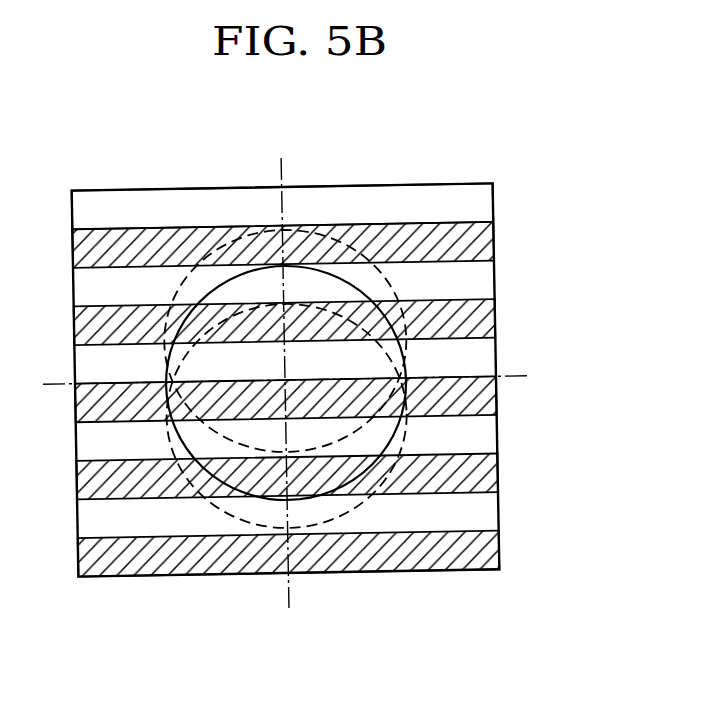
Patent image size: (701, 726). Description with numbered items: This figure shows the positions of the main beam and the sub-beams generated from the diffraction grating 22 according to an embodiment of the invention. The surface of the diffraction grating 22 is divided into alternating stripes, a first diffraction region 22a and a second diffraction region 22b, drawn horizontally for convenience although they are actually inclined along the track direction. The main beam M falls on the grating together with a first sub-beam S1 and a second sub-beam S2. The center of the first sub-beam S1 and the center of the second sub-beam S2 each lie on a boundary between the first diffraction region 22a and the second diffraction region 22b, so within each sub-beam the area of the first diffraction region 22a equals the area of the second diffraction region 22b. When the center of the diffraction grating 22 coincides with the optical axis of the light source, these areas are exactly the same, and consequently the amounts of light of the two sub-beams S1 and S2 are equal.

The diffraction grating 22 is at (462, 571).
The first diffraction region 22a is at (481, 212).
The second diffraction region 22b is at (495, 248).
The main beam M is at (408, 367).
The first sub-beam S1 is at (393, 293).
The second sub-beam S2 is at (340, 518).